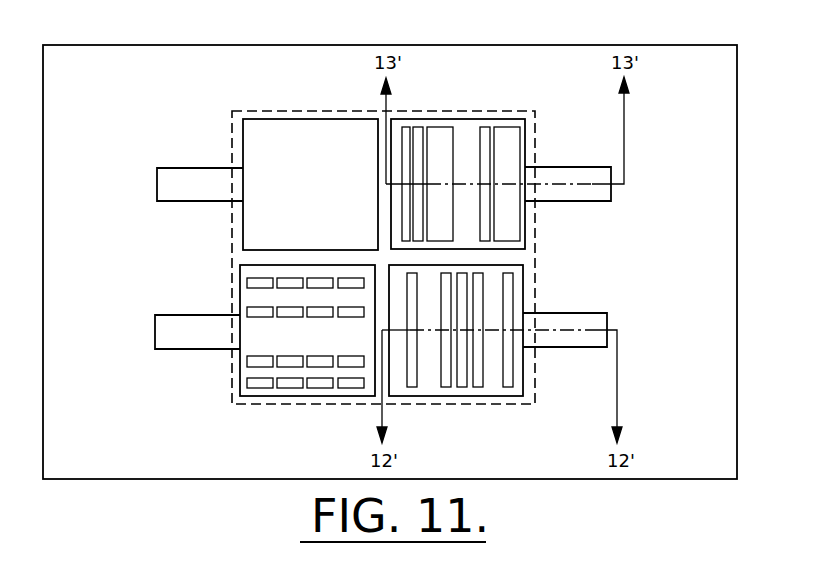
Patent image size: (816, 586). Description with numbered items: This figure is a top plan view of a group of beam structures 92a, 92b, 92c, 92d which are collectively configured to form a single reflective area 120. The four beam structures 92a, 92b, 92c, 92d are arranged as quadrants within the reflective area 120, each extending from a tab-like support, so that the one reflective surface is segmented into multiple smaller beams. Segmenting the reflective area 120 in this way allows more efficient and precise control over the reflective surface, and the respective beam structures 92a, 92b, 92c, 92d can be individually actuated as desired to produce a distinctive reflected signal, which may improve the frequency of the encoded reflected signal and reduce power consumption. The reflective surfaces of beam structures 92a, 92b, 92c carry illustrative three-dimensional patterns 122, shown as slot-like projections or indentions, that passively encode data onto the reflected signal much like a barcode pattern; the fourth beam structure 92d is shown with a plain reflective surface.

The reflective area 120 is at (250, 111).
The three-dimensional pattern 122 is at (470, 124).
The beam structure 92a is at (172, 315).
The beam structure 92b is at (595, 313).
The beam structure 92c is at (580, 201).
The beam structure 92d is at (182, 201).